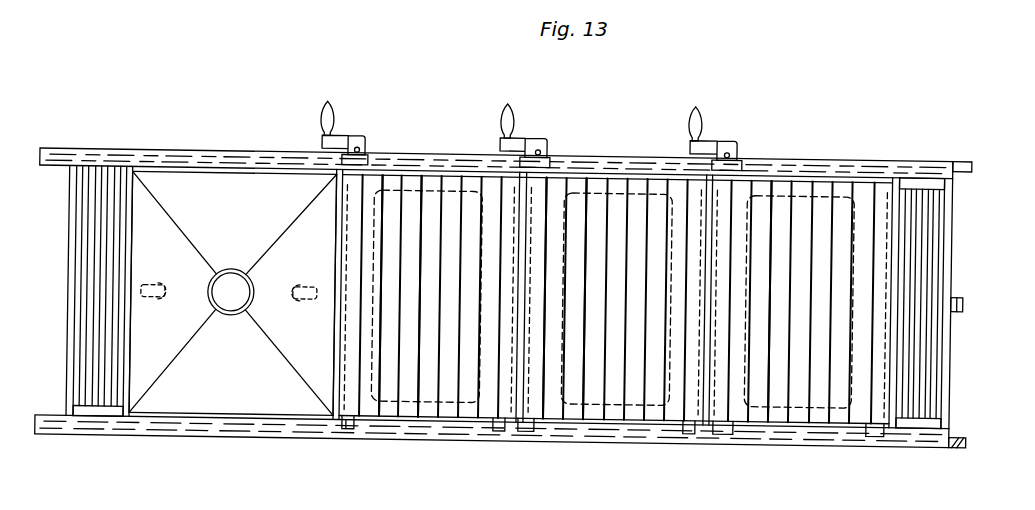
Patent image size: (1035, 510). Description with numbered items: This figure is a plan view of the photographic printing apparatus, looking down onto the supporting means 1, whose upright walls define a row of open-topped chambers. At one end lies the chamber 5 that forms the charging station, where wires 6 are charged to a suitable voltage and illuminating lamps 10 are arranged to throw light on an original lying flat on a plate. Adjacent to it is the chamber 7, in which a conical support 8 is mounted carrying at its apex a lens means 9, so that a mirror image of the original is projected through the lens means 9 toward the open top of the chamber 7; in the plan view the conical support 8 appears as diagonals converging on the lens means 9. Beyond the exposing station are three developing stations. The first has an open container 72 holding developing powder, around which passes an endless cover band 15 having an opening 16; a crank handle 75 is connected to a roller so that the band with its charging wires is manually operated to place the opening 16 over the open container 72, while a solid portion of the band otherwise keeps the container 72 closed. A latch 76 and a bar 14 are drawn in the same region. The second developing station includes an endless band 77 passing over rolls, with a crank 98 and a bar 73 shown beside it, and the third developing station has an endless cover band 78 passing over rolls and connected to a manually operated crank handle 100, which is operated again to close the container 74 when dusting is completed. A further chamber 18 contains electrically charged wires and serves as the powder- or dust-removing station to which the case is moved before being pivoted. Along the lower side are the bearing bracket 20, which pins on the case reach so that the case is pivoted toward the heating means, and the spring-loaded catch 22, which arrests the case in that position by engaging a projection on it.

The supporting means 1 is at (72, 321).
The chamber 5 is at (80, 240).
The wires 6 is at (85, 283).
The chamber 7 is at (197, 403).
The conical support 8 is at (295, 362).
The lens means 9 is at (233, 299).
The illuminating lamps 10 is at (168, 298).
The bar 14 is at (560, 192).
The cover band 15 is at (430, 199).
The opening 16 is at (394, 192).
The chamber 18 is at (943, 213).
The bearing bracket 20 is at (965, 424).
The spring-loaded catch 22 is at (967, 290).
The open container 72 is at (452, 184).
The bar 73 is at (592, 190).
The container 74 is at (778, 184).
The crank handle 75 is at (327, 96).
The latch 76 is at (358, 131).
The endless band 77 is at (623, 192).
The endless cover band 78 is at (805, 203).
The handle 98 is at (508, 101).
The crank handle 100 is at (697, 98).